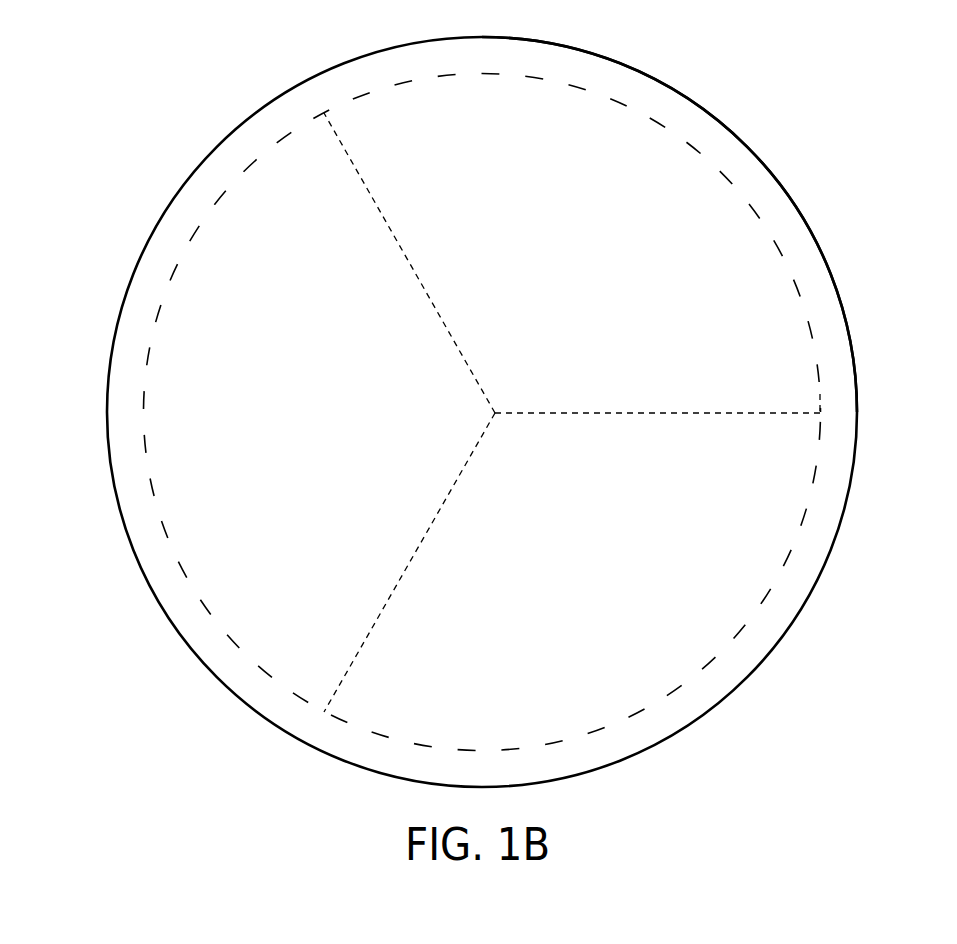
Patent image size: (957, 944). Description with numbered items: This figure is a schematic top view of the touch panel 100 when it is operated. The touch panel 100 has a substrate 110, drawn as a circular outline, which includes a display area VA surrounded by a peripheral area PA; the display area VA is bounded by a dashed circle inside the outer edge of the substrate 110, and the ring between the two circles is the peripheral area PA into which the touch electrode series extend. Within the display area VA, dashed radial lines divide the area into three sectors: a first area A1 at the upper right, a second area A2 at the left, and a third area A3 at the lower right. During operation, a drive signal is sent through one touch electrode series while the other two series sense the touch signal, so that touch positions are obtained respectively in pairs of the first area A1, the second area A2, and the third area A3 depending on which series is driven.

The touch panel 100 is at (46, 83).
The substrate 110 is at (740, 140).
The peripheral area PA is at (758, 190).
The display area VA is at (787, 262).
The first area A1 is at (603, 284).
The second area A2 is at (326, 423).
The third area A3 is at (596, 585).